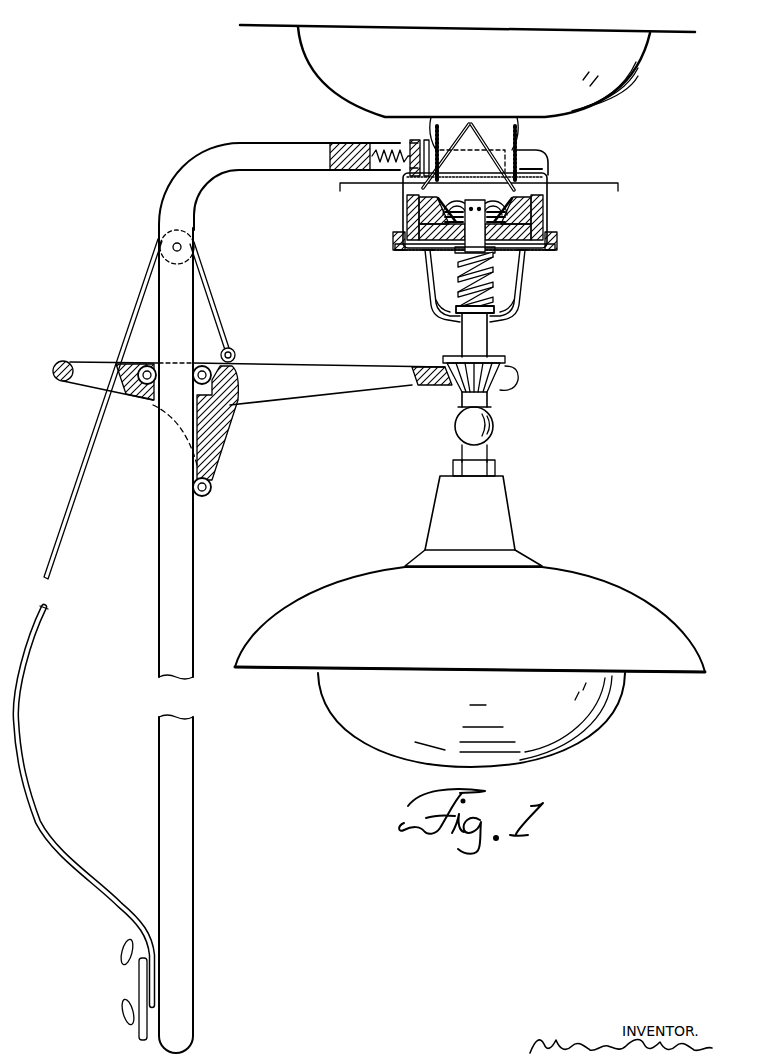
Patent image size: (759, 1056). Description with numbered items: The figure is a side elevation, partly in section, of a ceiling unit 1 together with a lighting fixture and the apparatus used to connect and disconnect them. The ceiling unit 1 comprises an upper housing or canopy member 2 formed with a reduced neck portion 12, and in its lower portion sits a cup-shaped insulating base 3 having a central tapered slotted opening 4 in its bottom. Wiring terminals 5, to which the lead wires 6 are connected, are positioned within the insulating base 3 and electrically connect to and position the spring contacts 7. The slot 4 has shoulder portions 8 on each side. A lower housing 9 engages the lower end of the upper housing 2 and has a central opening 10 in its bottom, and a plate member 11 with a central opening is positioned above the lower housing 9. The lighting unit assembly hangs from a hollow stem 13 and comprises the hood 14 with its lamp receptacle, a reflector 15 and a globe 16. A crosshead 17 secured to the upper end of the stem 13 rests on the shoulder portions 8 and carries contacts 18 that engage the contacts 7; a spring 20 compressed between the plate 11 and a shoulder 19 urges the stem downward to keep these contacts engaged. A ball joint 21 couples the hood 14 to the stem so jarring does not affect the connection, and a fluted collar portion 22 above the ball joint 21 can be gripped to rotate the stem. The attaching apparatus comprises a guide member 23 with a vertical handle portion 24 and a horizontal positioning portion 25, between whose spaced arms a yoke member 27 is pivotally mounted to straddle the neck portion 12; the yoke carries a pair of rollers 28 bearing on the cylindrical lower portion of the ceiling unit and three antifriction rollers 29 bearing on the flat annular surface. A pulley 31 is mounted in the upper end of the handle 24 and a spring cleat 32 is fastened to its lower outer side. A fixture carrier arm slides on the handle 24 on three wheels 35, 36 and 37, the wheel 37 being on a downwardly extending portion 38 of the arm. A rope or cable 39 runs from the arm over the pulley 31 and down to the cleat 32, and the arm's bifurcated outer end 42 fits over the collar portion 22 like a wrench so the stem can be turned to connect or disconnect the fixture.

The ceiling unit 1 is at (521, 138).
The upper housing or canopy member 2 is at (676, 70).
The insulating base 3 is at (549, 240).
The central tapered slotted opening 4 is at (432, 275).
The wiring terminals 5 is at (412, 196).
The lead wires 6 is at (414, 140).
The contacts 7 is at (422, 217).
The shoulder portions 8 is at (522, 268).
The lower housing 9 is at (431, 301).
The central opening 10 is at (495, 340).
The plate member 11 is at (428, 256).
The reduced neck portion 12 is at (382, 126).
The hollow stem 13 is at (490, 403).
The hood 14 is at (508, 514).
The reflector 15 is at (637, 598).
The globe 16 is at (613, 715).
The horizontal supporting member or crosshead 17 is at (528, 256).
The contacts 18 is at (475, 214).
The shoulder 19 is at (498, 312).
The spring 20 is at (497, 292).
The ball joint 21 is at (495, 431).
The collar portion 22 is at (500, 390).
The guide member 23 is at (195, 533).
The vertical handle portion 24 is at (193, 795).
The horizontal positioning portion 25 is at (294, 173).
The yoke member 27 is at (551, 158).
The rollers 28 is at (543, 170).
The antifriction rollers 29 is at (388, 148).
The pulley 31 is at (160, 241).
The cleat 32 is at (138, 977).
The wheel 35 is at (203, 364).
The wheel 36 is at (143, 362).
The wheel 37 is at (212, 487).
The downwardly extending portion 38 is at (226, 430).
The rope or cable 39 is at (213, 277).
The bifurcated outer end 42 is at (522, 375).